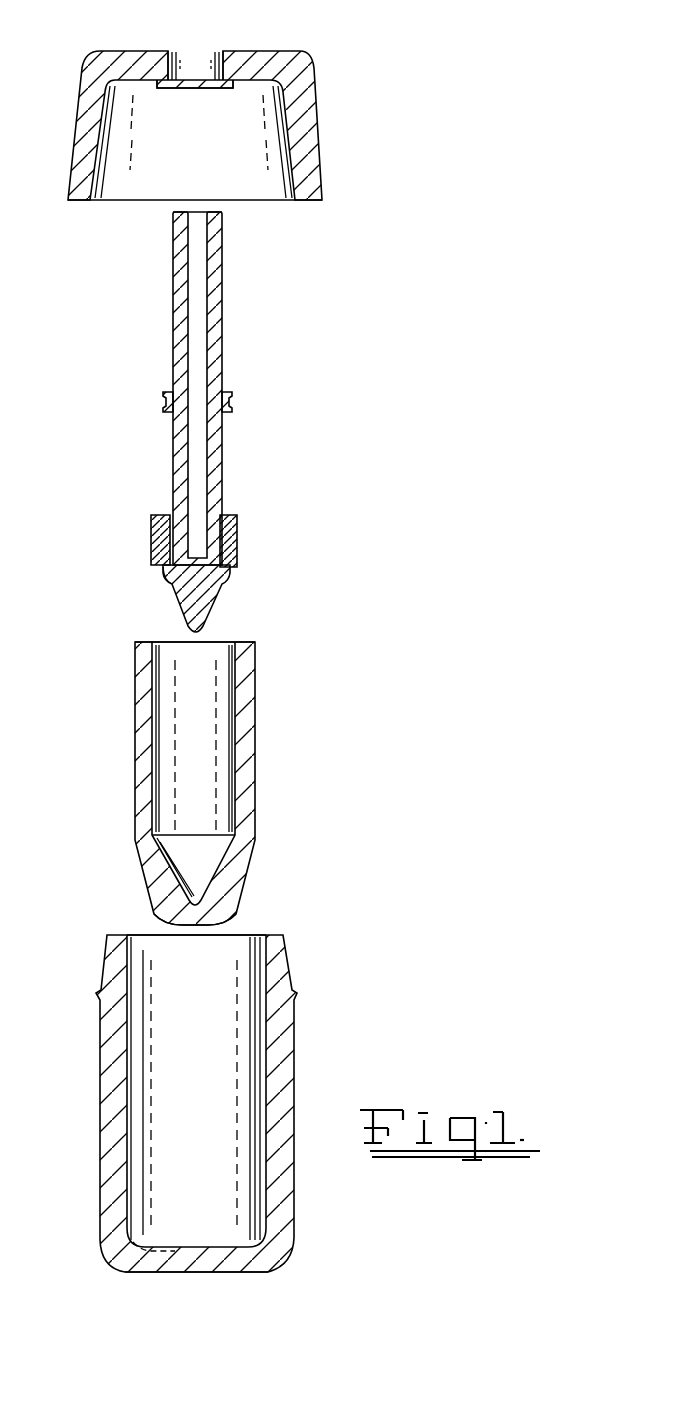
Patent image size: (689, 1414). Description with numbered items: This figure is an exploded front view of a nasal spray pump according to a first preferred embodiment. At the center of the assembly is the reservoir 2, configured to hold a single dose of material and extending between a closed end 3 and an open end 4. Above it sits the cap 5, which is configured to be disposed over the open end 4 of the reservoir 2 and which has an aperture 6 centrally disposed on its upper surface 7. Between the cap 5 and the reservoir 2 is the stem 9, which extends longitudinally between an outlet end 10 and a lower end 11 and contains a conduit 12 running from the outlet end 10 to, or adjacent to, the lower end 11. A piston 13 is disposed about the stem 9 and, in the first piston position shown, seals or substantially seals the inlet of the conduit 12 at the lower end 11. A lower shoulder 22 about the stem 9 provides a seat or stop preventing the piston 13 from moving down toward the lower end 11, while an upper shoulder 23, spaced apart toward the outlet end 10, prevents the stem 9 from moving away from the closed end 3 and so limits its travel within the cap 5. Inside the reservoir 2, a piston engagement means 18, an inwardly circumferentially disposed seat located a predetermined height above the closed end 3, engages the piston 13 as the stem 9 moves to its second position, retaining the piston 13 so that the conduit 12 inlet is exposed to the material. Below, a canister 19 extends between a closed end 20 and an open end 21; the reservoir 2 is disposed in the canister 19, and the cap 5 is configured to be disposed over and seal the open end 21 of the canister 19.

The reservoir 2 is at (186, 769).
The closed end 3 is at (150, 640).
The open end 4 is at (190, 927).
The cap 5 is at (313, 110).
The aperture 6 is at (175, 42).
The upper surface 7 is at (232, 50).
The stem 9 is at (228, 422).
The outlet end 10 is at (176, 209).
The lower end 11 is at (213, 622).
The conduit 12 is at (198, 306).
The piston 13 is at (150, 513).
The piston engagement means 18 is at (182, 835).
The canister 19 is at (221, 1090).
The closed end 20 is at (283, 1258).
The open end 21 is at (270, 935).
The lower shoulder 22 is at (163, 572).
The upper shoulder 23 is at (163, 401).